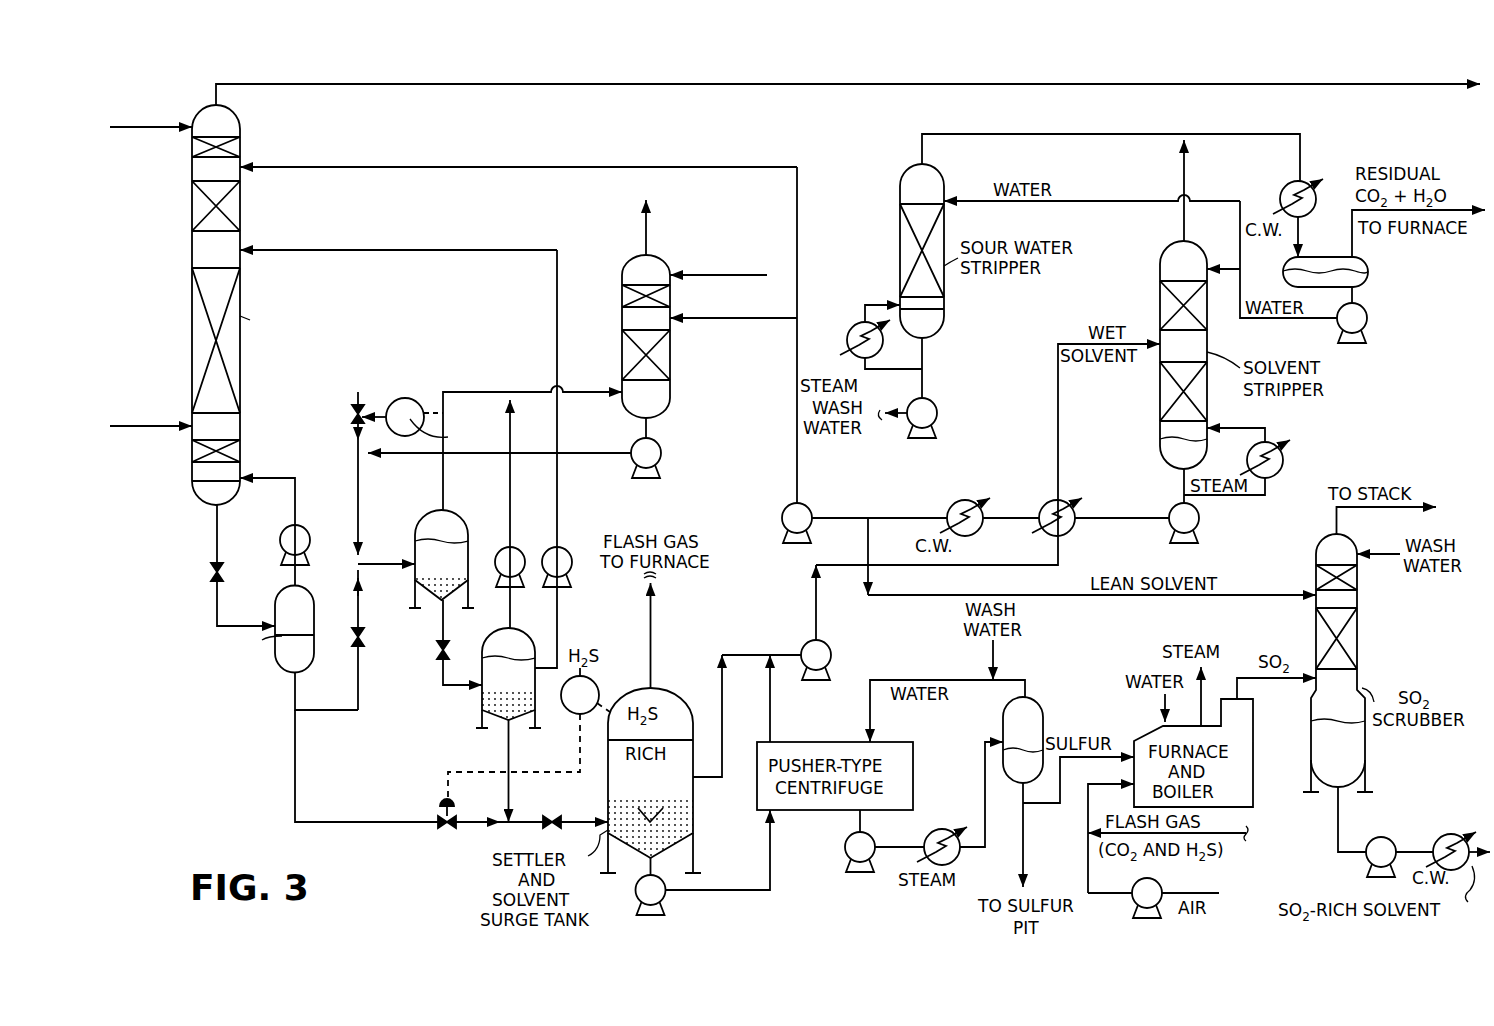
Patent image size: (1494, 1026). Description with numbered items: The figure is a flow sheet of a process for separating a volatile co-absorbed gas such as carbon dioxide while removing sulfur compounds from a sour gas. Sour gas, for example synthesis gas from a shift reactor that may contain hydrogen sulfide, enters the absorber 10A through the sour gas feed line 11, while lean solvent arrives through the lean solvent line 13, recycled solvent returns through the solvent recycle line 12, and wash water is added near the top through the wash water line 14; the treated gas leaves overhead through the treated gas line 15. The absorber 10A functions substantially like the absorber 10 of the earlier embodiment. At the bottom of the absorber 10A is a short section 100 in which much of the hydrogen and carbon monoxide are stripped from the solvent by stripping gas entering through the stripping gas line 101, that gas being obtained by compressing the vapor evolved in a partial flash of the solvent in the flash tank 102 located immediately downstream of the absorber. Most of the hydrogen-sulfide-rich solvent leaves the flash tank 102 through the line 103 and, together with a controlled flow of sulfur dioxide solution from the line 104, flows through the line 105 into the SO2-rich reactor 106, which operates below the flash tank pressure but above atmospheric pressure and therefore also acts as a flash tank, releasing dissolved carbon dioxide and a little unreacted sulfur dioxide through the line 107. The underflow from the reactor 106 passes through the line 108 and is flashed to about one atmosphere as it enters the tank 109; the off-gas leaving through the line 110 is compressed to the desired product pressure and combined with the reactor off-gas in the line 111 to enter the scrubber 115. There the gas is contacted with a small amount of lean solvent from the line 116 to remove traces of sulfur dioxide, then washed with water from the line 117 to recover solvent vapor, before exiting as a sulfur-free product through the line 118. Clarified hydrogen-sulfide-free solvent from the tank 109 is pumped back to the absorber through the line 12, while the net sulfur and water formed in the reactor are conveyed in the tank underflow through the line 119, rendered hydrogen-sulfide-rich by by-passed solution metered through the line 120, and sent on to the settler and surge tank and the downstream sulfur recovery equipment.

The absorber 10 is at (217, 538).
The absorber 10A is at (192, 336).
The sour gas feed line 11 is at (118, 428).
The solvent recycle line 12 is at (455, 252).
The lean solvent line 13 is at (478, 168).
The wash water line 14 is at (168, 127).
The treated gas line 15 is at (384, 84).
The short section 100 is at (192, 482).
The stripping gas line 101 is at (295, 498).
The flash tank 102 is at (306, 594).
The H2S-rich solvent line 103 is at (330, 710).
The SO2 solution line 104 is at (358, 505).
The reactor feed line 105 is at (378, 568).
The SO2-rich reactor 106 is at (453, 518).
The off-gas line 107 is at (443, 413).
The underflow line 108 is at (443, 632).
The tank 109 is at (482, 692).
The off-gas line 110 is at (510, 430).
The combined off-gas line 111 is at (583, 392).
The scrubber 115 is at (670, 380).
The lean solvent line 116 is at (698, 318).
The wash water line 117 is at (690, 275).
The sulfur-free product line 118 is at (646, 232).
The underflow line 119 is at (508, 752).
The by-pass H2S solution line 120 is at (295, 786).